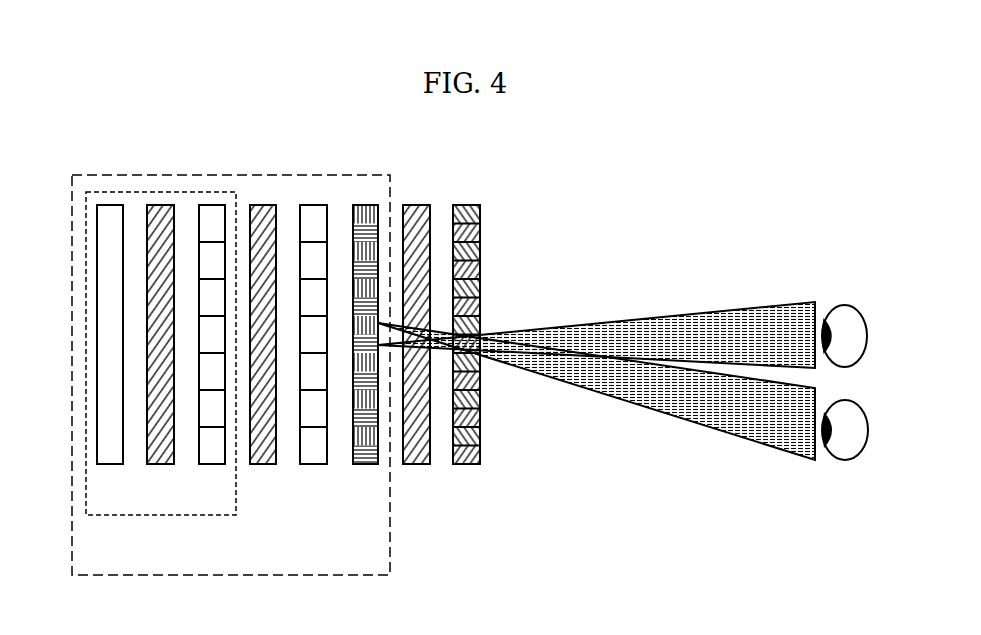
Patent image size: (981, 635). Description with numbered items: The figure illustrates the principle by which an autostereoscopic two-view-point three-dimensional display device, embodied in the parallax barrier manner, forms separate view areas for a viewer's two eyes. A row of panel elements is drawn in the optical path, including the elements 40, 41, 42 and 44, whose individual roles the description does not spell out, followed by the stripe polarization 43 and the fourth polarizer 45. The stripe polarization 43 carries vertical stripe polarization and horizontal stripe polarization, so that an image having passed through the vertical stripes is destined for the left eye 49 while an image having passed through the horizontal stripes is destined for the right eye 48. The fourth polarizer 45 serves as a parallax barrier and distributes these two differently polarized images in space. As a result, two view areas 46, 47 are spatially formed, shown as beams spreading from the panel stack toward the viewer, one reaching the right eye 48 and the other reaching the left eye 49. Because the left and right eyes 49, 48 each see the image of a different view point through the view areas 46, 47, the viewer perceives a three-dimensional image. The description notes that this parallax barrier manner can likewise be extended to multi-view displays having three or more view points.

The backlight unit 40 is at (165, 515).
The first polarizer 41 is at (264, 464).
The liquid crystal panel 42 is at (315, 464).
The stripe polarization 43 is at (366, 464).
The second polarizer 44 is at (418, 464).
The fourth polarizer 45 is at (468, 464).
The view area 46 is at (628, 318).
The view area 47 is at (629, 407).
The right eye 48 is at (843, 305).
The left eye 49 is at (846, 461).